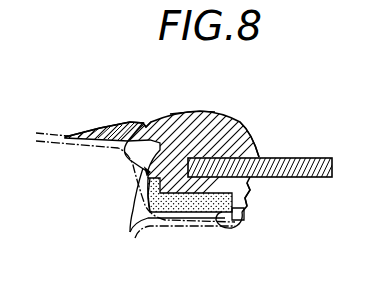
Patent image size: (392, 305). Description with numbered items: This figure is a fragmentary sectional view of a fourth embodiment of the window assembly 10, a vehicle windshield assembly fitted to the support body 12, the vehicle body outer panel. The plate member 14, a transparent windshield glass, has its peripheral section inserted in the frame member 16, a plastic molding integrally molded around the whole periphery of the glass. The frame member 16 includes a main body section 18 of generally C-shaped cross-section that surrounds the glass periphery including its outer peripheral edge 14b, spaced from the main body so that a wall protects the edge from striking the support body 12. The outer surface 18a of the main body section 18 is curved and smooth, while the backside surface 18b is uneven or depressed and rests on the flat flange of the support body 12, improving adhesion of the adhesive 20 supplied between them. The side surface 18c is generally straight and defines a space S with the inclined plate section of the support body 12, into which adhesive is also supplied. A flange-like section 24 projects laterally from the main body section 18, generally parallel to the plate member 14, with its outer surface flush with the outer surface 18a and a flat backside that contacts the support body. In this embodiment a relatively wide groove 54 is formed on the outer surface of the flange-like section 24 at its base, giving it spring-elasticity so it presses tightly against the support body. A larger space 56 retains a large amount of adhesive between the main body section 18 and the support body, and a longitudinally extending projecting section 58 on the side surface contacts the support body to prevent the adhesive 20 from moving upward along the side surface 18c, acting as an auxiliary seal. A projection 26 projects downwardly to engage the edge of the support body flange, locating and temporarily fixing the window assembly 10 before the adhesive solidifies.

The window assembly 10 is at (294, 103).
The support body 12 is at (197, 215).
The plate member 14 is at (300, 178).
The outer peripheral edge 14b is at (150, 212).
The frame member 16 is at (243, 137).
The main body section 18 is at (222, 128).
The outer surface 18a is at (196, 118).
The backside surface 18b is at (240, 226).
The side surface 18c is at (135, 168).
The adhesive 20 is at (208, 218).
The flange-like section 24 is at (100, 130).
The projection 26 is at (248, 206).
The groove 54 is at (144, 122).
The space 56 is at (183, 212).
The projecting section 58 is at (146, 174).
The space S is at (122, 148).